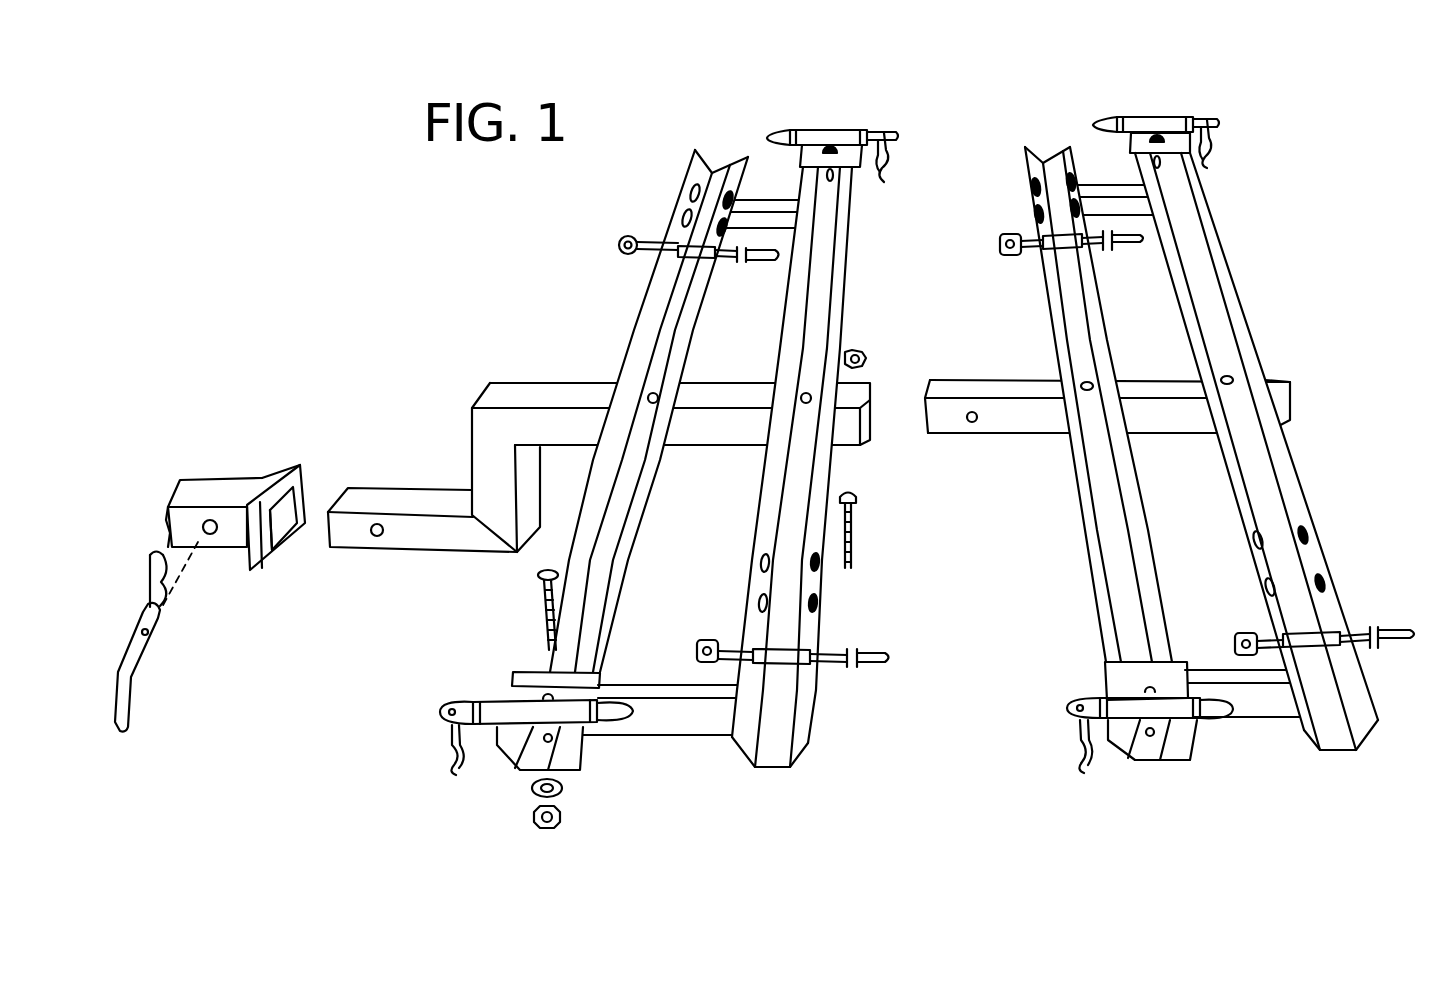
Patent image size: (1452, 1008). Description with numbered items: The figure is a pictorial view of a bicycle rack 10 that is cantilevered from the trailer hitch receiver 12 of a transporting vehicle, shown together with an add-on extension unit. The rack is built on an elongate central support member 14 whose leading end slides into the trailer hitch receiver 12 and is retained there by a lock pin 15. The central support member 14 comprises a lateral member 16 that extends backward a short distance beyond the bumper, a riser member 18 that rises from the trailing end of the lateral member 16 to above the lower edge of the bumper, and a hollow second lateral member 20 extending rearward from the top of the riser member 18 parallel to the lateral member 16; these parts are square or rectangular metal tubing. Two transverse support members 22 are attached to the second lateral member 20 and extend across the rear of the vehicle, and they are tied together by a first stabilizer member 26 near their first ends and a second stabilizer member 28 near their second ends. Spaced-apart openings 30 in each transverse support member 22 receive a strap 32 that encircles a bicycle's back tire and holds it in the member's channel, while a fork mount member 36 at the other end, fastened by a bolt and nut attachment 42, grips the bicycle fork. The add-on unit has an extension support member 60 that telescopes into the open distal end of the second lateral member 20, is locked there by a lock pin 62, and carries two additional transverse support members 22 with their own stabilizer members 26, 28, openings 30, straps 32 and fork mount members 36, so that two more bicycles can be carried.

The bicycle rack 10 is at (934, 464).
The trailer hitch receiver 12 is at (270, 483).
The central support member 14 is at (599, 455).
The lock pin 15 is at (133, 648).
The lateral member 16 is at (430, 535).
The riser member 18 is at (488, 465).
The second lateral member 20 is at (713, 423).
The transverse support member 22 is at (655, 301).
The first stabilizer member 26 is at (663, 717).
The second stabilizer member 28 is at (770, 217).
The openings 30 is at (685, 217).
The strap 32 is at (700, 260).
The fork mount member 36 is at (840, 133).
The bolt and nut attachment 42 is at (537, 611).
The extension support member 60 is at (1163, 383).
The lock pin 62 is at (858, 522).